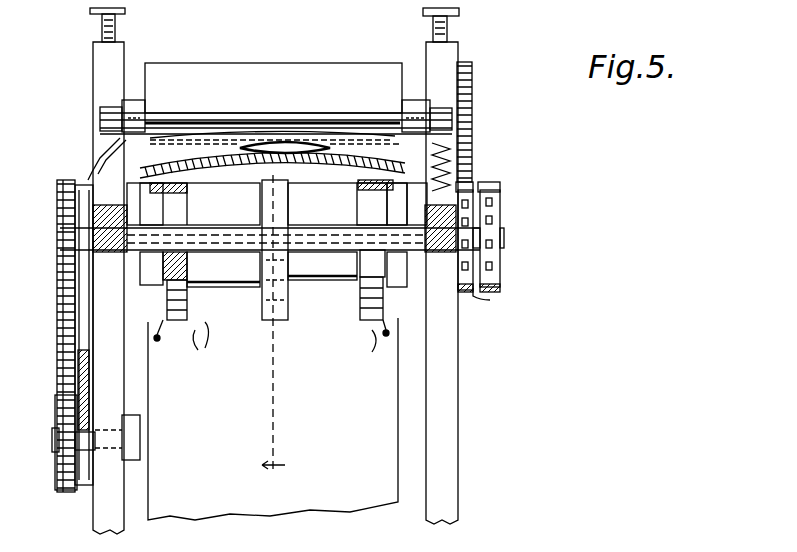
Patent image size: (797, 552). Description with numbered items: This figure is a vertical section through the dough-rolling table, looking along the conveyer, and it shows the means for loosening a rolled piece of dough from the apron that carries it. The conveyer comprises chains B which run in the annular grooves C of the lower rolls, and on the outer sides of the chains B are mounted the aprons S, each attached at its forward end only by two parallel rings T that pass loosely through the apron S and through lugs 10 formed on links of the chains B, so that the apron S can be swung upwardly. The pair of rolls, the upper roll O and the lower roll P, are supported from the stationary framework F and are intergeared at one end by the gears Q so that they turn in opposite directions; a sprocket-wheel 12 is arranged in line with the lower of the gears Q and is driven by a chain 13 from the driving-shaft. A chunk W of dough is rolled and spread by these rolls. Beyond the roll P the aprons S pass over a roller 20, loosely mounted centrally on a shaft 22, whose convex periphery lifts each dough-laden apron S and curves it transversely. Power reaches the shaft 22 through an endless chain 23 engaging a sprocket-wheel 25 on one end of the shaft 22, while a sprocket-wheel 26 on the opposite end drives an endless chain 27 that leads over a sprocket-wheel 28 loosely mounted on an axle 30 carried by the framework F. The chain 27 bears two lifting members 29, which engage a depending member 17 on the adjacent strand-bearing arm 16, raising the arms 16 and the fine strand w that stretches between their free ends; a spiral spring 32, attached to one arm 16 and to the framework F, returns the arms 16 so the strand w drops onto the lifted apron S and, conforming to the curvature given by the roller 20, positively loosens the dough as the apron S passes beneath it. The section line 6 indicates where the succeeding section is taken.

The section line 6 6 is at (272, 114).
The lugs 10 is at (165, 195).
The sprocket-wheel 12 is at (502, 200).
The chain 13 is at (500, 289).
The strand-bearing arms 16 is at (121, 118).
The depending member 17 is at (88, 172).
The roller 20 is at (275, 250).
The shaft 22 is at (214, 246).
The endless chain 23 is at (470, 292).
The sprocket-wheel 25 is at (490, 300).
The sprocket-wheel 26 is at (58, 264).
The endless chain 27 is at (58, 346).
The sprocket-wheel 28 is at (56, 468).
The lifting members 29 is at (88, 294).
The axle 30 is at (52, 438).
The spiral spring 32 is at (452, 160).
The upper roll O is at (292, 62).
The aprons S is at (210, 130).
The chunk of dough W is at (300, 144).
The strand w is at (240, 120).
The chains B is at (180, 195).
The rings T is at (368, 368).
The annular grooves C is at (187, 284).
The lower roll P is at (359, 282).
The gears Q is at (470, 172).
The stationary framework F is at (452, 402).